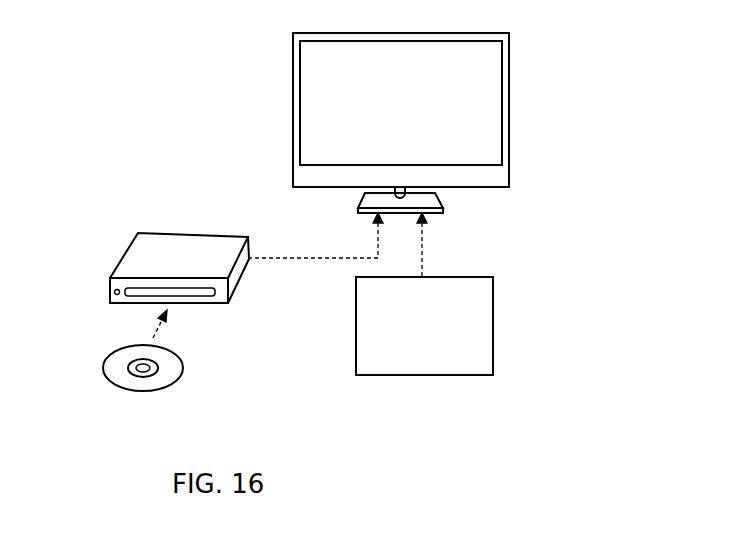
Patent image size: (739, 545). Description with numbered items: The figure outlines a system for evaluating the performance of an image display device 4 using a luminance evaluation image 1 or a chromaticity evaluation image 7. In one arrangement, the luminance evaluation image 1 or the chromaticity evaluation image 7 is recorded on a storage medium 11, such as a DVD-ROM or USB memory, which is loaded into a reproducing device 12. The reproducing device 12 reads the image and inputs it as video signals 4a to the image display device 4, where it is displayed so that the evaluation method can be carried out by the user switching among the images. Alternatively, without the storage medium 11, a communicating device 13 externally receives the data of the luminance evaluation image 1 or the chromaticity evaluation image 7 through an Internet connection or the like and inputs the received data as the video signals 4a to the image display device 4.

The image display device 4 is at (529, 50).
The luminance evaluation image 1 is at (451, 103).
The chromaticity evaluation image 7 is at (483, 98).
The video signals 4a is at (353, 245).
The reproducing device 12 is at (127, 252).
The storage medium 11 is at (107, 355).
The communicating device 13 is at (493, 320).